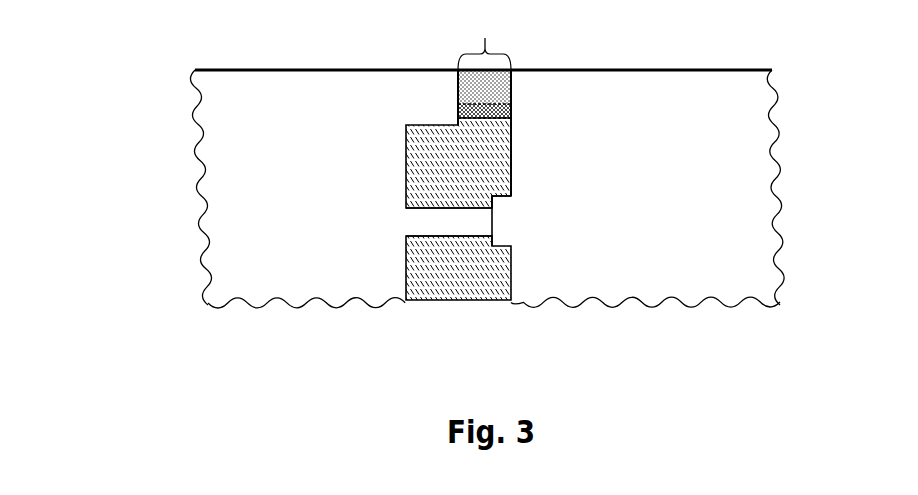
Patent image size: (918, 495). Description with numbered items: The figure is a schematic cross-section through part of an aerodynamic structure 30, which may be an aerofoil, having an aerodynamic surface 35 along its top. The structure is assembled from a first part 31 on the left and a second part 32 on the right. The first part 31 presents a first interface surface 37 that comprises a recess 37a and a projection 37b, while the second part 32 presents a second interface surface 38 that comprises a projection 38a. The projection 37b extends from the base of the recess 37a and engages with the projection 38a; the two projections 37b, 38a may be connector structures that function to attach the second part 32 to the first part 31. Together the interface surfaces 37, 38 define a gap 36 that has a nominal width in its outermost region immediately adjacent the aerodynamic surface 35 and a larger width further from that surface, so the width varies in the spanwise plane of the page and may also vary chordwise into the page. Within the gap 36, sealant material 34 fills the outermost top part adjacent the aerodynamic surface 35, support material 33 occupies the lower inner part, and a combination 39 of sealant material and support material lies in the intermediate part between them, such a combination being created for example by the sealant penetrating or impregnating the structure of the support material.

The aerodynamic structure 30 is at (118, 71).
The first part 31 is at (297, 189).
The second part 32 is at (647, 188).
The support material 33 is at (467, 272).
The sealant material 34 is at (488, 97).
The aerodynamic surface 35 is at (310, 70).
The gap 36 is at (484, 41).
The first interface surface 37 is at (458, 88).
The recess 37a is at (420, 167).
The projection 37b is at (445, 220).
The second interface surface 38 is at (512, 165).
The projection 38a is at (502, 215).
The combination of sealant material and support material 39 is at (508, 110).